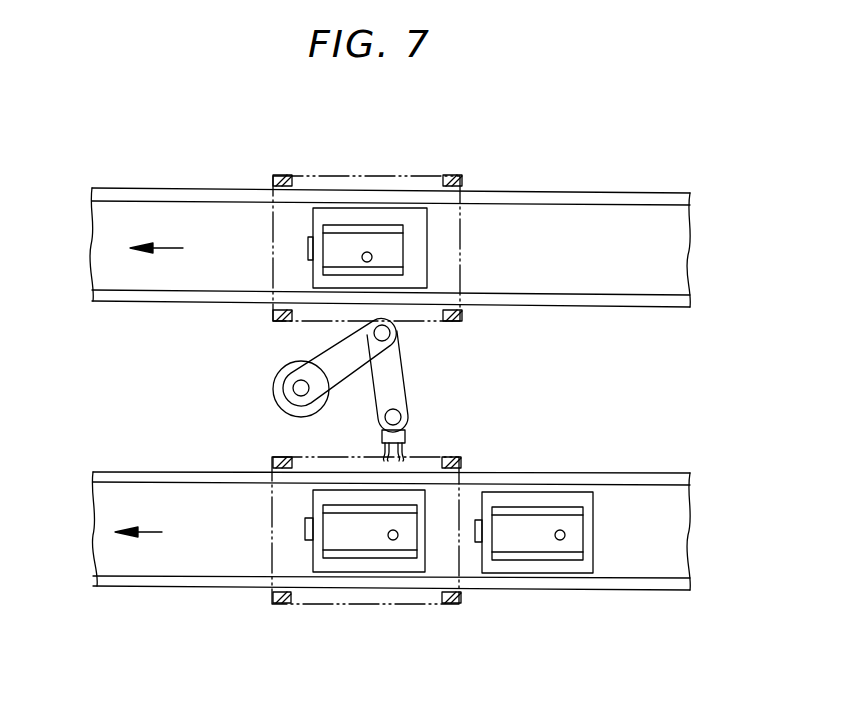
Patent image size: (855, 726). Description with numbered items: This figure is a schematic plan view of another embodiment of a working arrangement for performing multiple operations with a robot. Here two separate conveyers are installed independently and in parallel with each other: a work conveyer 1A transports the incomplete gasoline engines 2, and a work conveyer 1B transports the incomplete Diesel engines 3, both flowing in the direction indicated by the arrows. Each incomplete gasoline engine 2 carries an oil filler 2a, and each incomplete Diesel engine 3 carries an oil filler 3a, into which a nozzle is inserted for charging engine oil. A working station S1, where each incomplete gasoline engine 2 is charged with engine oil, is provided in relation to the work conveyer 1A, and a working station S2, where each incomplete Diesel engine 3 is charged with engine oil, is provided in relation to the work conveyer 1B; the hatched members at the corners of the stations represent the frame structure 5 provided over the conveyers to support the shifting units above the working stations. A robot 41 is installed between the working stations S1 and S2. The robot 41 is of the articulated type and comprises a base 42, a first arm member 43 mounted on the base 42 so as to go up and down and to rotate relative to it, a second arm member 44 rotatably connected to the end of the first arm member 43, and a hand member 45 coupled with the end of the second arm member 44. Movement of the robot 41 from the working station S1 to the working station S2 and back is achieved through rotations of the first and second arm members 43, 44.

The work conveyer 1A is at (177, 582).
The work conveyer 1B is at (172, 302).
The incomplete gasoline engine 2 is at (345, 543).
The oil filler 2a is at (388, 539).
The incomplete Diesel engine 3 is at (357, 240).
The oil filler 3a is at (373, 257).
The frame structure 5 is at (463, 177).
The robot 41 is at (319, 389).
The base 42 is at (282, 374).
The first arm member 43 is at (332, 355).
The second arm member 44 is at (393, 372).
The hand member 45 is at (407, 453).
The working station S1 is at (294, 619).
The working station S2 is at (300, 168).